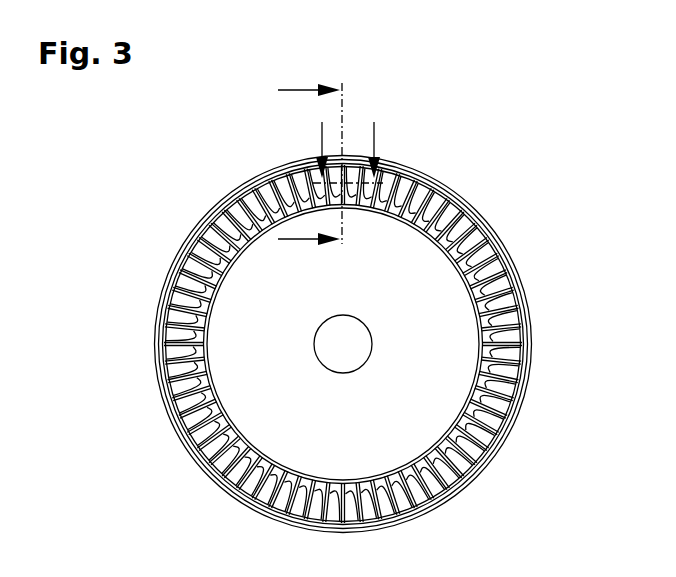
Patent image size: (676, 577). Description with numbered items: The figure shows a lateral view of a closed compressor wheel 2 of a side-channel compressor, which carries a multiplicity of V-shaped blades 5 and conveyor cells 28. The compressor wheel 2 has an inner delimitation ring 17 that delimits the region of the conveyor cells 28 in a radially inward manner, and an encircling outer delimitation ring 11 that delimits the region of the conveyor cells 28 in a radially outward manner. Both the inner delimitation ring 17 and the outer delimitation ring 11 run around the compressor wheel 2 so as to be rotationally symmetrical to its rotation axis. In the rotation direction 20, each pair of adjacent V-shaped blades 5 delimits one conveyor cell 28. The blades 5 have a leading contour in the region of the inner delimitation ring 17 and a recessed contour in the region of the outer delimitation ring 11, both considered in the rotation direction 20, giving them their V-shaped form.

The compressor wheel 2 is at (148, 187).
The V-shaped blade 5 is at (192, 271).
The outer delimitation ring 11 is at (490, 237).
The inner delimitation ring 17 is at (492, 410).
The rotation direction 20 is at (383, 500).
The conveyor cell 28 is at (512, 310).